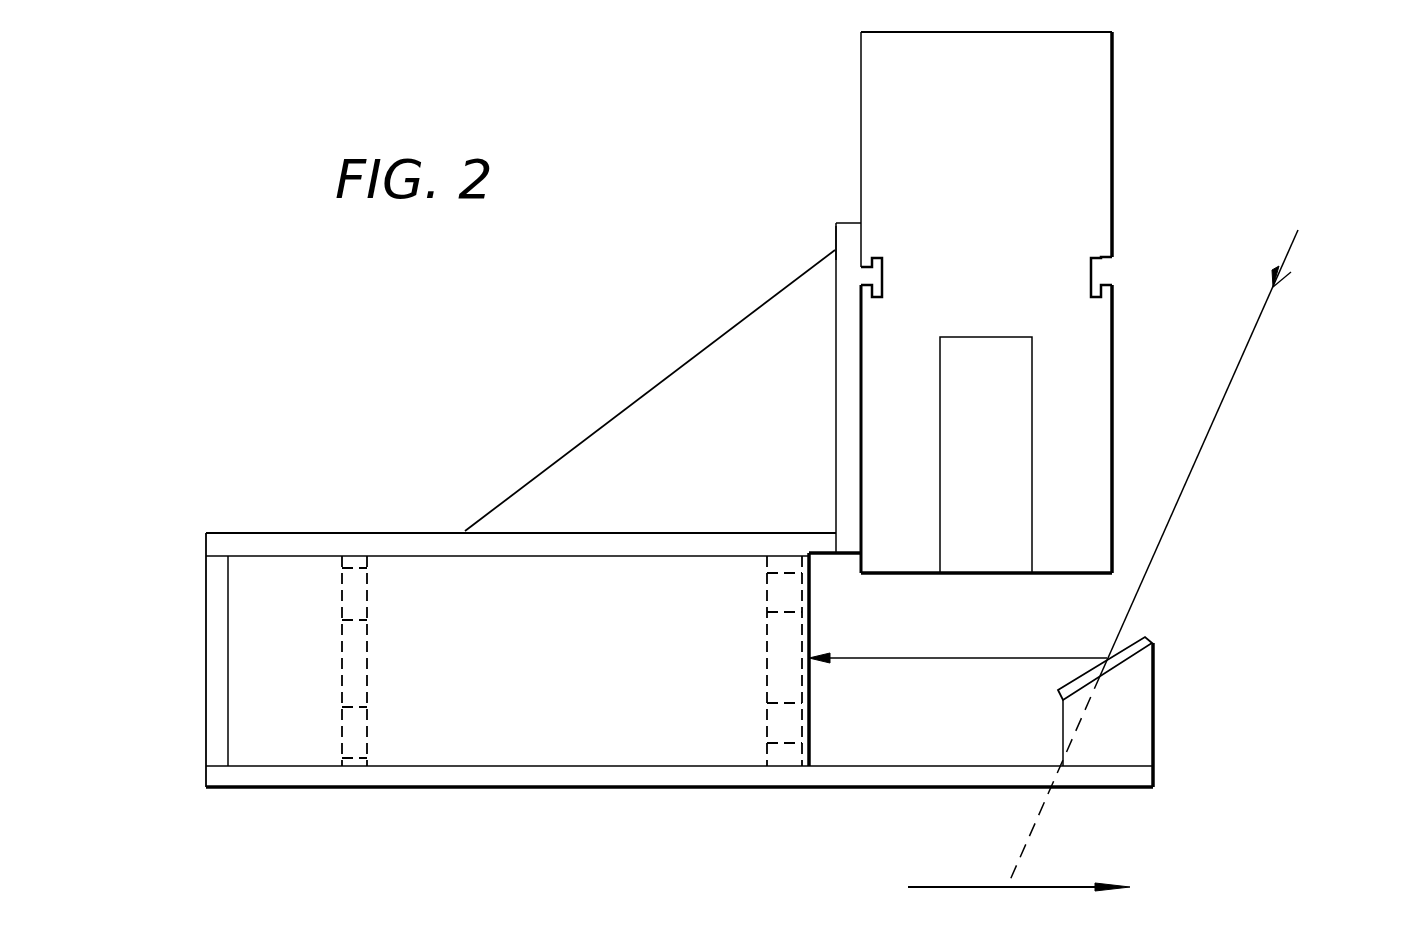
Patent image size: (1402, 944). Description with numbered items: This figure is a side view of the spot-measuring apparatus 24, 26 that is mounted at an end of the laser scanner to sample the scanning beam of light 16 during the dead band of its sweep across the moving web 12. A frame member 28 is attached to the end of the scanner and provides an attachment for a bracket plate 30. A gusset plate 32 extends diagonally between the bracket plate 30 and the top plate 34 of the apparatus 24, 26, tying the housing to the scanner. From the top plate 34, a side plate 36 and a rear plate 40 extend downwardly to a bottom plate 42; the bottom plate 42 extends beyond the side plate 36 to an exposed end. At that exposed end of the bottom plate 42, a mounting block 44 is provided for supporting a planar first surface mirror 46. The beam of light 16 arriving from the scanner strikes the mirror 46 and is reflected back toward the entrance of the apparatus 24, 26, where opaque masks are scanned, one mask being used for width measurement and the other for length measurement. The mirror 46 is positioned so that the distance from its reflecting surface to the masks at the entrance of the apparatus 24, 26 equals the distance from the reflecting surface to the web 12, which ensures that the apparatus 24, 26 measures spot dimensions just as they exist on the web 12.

The web 12 is at (928, 887).
The scanning beam of light 16 is at (1203, 450).
The apparatus 24 is at (447, 661).
The apparatus 26 is at (681, 661).
The frame member 28 is at (996, 172).
The bracket plate 30 is at (836, 231).
The gusset plate 32 is at (737, 442).
The top plate 34 is at (416, 533).
The side plate 36 is at (613, 745).
The rear plate 40 is at (213, 691).
The bottom plate 42 is at (487, 777).
The mounting block 44 is at (1130, 737).
The first surface mirror 46 is at (1137, 632).